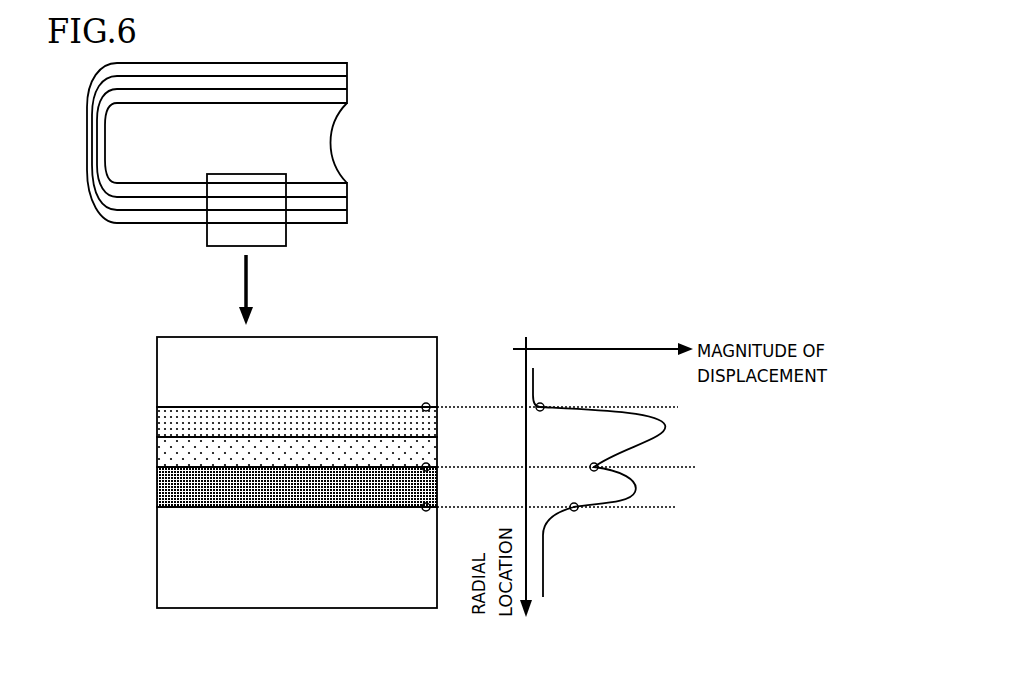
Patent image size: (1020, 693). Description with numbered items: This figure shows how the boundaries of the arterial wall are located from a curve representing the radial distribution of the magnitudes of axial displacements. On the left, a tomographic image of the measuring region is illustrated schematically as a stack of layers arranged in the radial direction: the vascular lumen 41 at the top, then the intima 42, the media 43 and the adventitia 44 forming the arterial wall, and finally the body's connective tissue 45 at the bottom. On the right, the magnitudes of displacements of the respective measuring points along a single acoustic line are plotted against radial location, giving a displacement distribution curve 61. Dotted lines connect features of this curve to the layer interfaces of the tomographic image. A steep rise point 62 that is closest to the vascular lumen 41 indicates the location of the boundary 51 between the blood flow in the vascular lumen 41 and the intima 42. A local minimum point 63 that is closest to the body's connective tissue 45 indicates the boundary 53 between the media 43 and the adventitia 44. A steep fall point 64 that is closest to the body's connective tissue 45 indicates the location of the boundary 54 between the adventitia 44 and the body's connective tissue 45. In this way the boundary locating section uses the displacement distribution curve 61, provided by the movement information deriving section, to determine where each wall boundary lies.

The vascular lumen 41 is at (155, 407).
The intima 42 is at (155, 408).
The media 43 is at (155, 438).
The adventitia 44 is at (155, 468).
The body's connective tissue 45 is at (155, 508).
The boundary between blood flow and intima 51 is at (155, 407).
The boundary between media and adventitia 53 is at (155, 467).
The boundary between adventitia and connective tissue 54 is at (155, 508).
The displacement distribution curve 61 is at (533, 378).
The steep rise point 62 is at (545, 405).
The local minimum point 63 is at (598, 465).
The steep fall point 64 is at (577, 510).